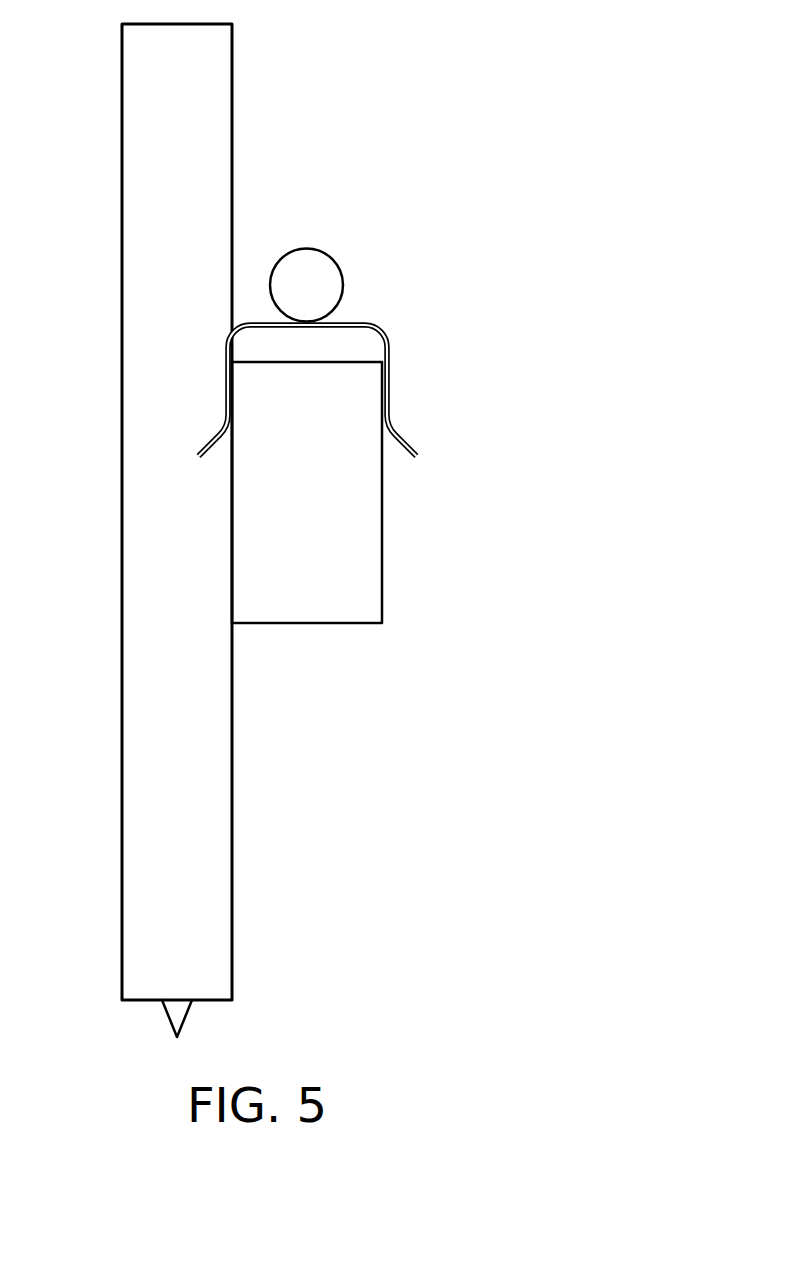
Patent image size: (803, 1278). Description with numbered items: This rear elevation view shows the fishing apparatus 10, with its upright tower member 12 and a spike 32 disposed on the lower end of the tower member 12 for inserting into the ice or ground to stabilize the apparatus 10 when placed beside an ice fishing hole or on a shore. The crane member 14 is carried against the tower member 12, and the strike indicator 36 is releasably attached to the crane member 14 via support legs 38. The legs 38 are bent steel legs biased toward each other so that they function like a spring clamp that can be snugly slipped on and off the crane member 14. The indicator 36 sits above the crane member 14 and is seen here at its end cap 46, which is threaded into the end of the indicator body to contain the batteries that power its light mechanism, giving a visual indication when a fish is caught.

The apparatus 10 is at (363, 47).
The tower member 12 is at (158, 137).
The crane member 14 is at (323, 488).
The spike 32 is at (187, 1018).
The strike indicator 36 is at (322, 236).
The support legs 38 is at (388, 387).
The end cap 46 is at (323, 278).